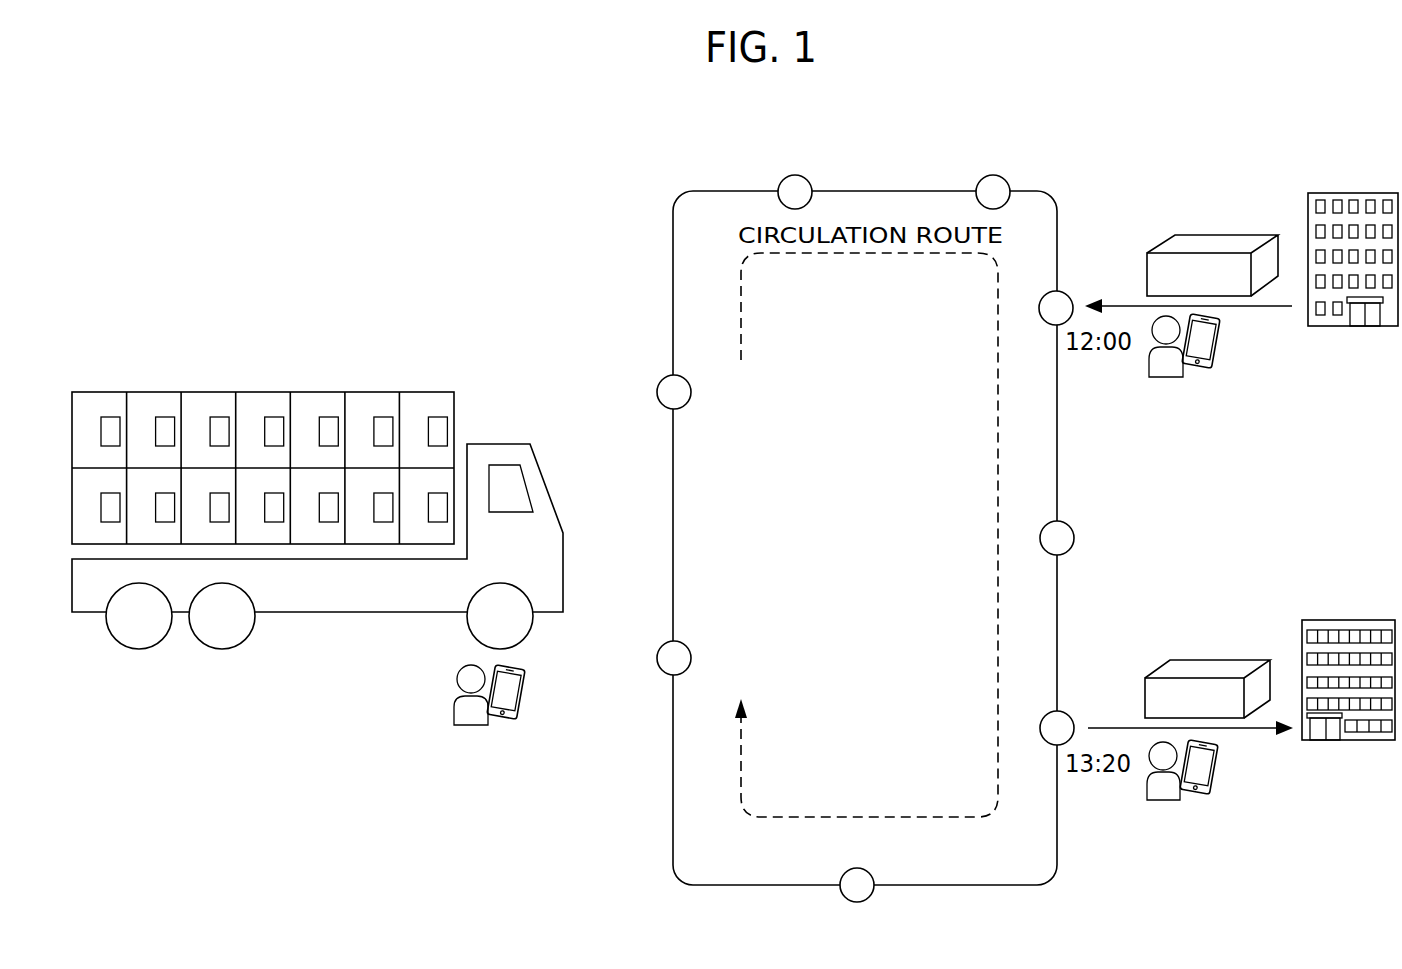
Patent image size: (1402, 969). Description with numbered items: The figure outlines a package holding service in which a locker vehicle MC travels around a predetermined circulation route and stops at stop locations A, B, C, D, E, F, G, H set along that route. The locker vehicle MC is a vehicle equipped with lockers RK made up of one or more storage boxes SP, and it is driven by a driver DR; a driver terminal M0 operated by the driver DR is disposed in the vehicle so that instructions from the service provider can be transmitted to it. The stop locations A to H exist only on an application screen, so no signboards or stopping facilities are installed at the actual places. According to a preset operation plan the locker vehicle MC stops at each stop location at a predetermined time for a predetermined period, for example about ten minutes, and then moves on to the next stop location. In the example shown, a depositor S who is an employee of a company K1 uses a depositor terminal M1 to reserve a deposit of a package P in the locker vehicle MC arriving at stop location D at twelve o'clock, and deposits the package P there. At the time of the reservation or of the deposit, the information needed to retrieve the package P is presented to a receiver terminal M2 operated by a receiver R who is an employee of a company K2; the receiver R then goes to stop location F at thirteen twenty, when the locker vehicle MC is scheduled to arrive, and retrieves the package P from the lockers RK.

The locker vehicle MC is at (510, 442).
The locker RK is at (305, 392).
The storage box SP is at (200, 408).
The driver DR is at (467, 730).
The driver terminal M0 is at (515, 715).
The stop location A is at (661, 380).
The stop location B is at (793, 175).
The stop location C is at (993, 175).
The stop location D is at (1072, 295).
The stop location E is at (1072, 525).
The stop location F is at (1072, 717).
The stop location G is at (852, 902).
The stop location H is at (661, 645).
The package P is at (1203, 232).
The depositor S is at (1162, 377).
The depositor terminal M1 is at (1208, 370).
The company K1 is at (1345, 327).
The receiver R is at (1160, 802).
The receiver terminal M2 is at (1207, 793).
The company K2 is at (1332, 742).